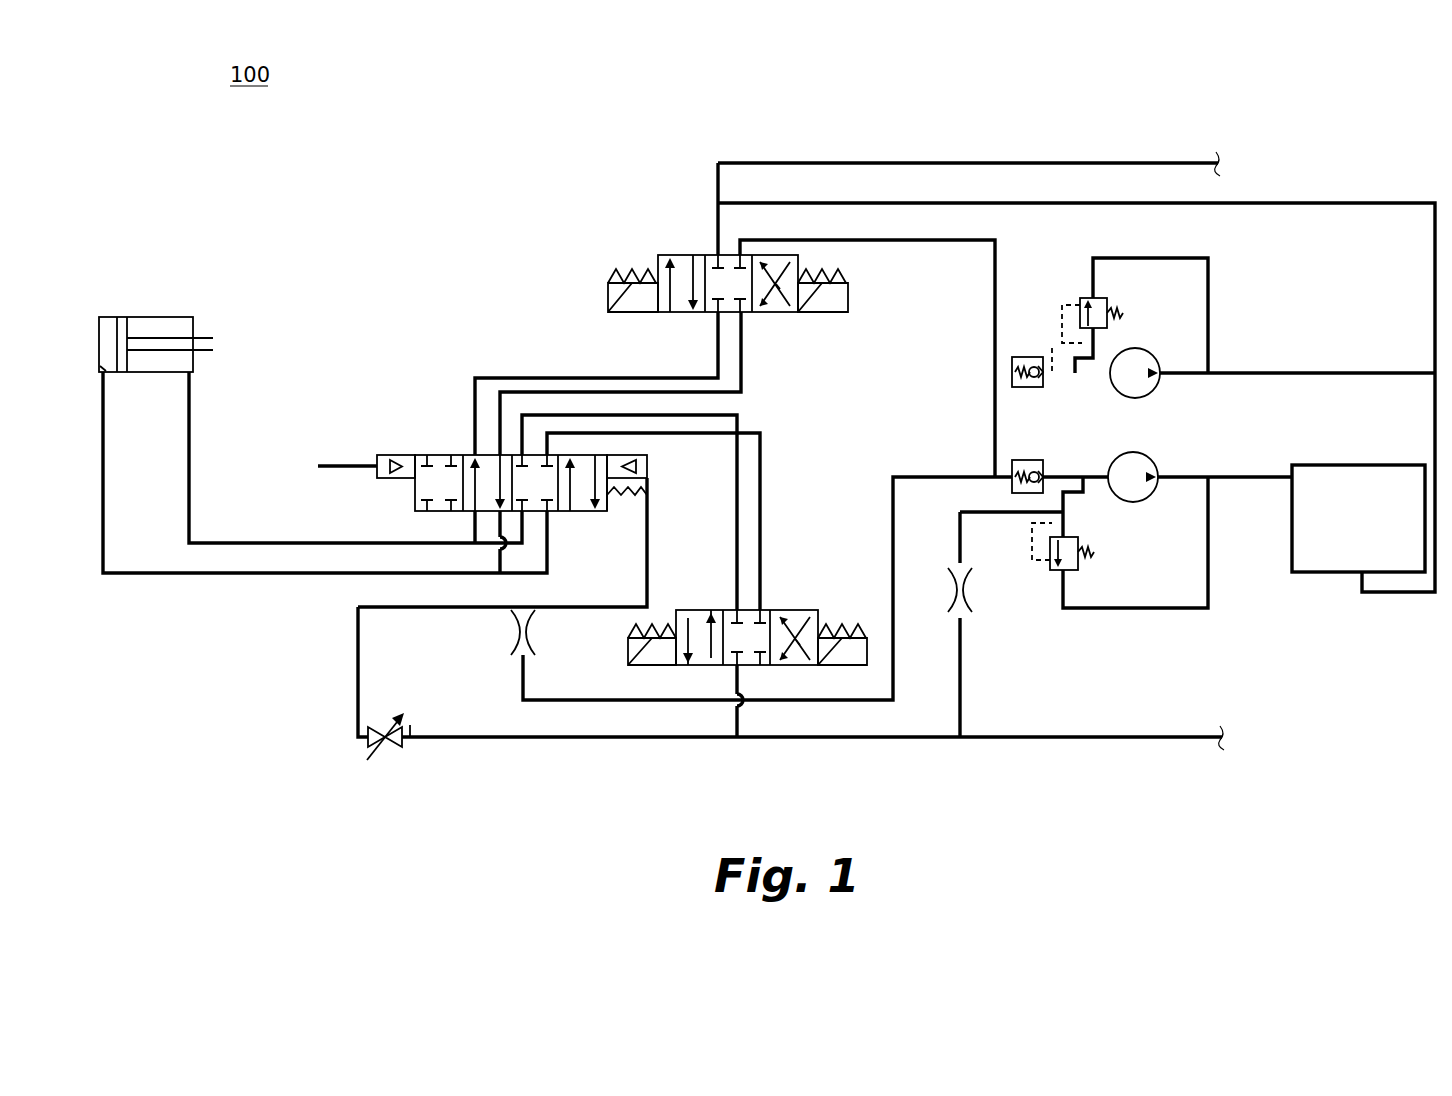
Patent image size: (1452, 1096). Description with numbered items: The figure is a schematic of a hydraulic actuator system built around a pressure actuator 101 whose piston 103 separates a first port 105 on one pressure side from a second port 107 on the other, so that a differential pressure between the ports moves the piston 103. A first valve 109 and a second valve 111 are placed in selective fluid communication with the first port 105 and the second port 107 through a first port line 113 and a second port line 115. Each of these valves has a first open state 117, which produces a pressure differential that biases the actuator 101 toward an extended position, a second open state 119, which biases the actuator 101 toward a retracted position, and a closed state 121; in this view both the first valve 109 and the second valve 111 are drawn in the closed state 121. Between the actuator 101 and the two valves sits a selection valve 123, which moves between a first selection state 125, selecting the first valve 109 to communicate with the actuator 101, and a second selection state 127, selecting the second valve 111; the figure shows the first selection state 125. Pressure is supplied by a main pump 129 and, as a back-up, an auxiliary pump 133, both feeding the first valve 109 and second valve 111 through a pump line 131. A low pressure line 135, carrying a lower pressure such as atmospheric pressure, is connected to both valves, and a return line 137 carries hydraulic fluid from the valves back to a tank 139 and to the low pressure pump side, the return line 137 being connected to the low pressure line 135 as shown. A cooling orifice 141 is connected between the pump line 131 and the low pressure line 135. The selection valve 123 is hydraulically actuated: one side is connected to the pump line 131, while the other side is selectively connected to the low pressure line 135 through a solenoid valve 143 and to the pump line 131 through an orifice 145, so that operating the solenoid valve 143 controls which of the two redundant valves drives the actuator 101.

The pressure actuator 101 is at (175, 317).
The piston 103 is at (120, 317).
The first port 105 is at (105, 376).
The second port 107 is at (192, 376).
The first valve 109 is at (655, 256).
The second valve 111 is at (815, 610).
The first port line 113 is at (163, 576).
The second port line 115 is at (270, 543).
The first open state 117 is at (683, 262).
The second open state 119 is at (790, 312).
The closed state 121 is at (741, 256).
The selection valve 123 is at (415, 455).
The first selection state 125 is at (472, 513).
The second selection state 127 is at (579, 512).
The main pump 129 is at (1140, 502).
The pump line 131 is at (340, 465).
The auxiliary pump 133 is at (1140, 350).
The low pressure line 135 is at (800, 162).
The return line 137 is at (910, 203).
The tank 139 is at (1370, 514).
The cooling orifice 141 is at (968, 602).
The solenoid valve 143 is at (388, 750).
The orifice 145 is at (514, 632).